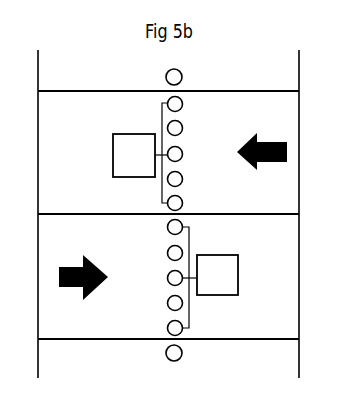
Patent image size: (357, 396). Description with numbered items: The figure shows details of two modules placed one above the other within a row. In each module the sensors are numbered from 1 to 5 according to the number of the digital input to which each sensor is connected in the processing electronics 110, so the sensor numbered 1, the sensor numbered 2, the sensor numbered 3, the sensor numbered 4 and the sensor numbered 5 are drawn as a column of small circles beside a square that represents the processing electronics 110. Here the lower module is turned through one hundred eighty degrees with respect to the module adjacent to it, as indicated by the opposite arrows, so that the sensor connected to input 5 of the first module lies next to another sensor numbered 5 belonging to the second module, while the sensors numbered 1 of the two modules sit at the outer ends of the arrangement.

The sensor numbered 1 is at (174, 216).
The sensor numbered 2 is at (174, 215).
The sensor numbered 3 is at (174, 216).
The sensor numbered 4 is at (174, 216).
The sensor numbered 5 is at (174, 215).
The processing electronics 110 is at (115, 177).